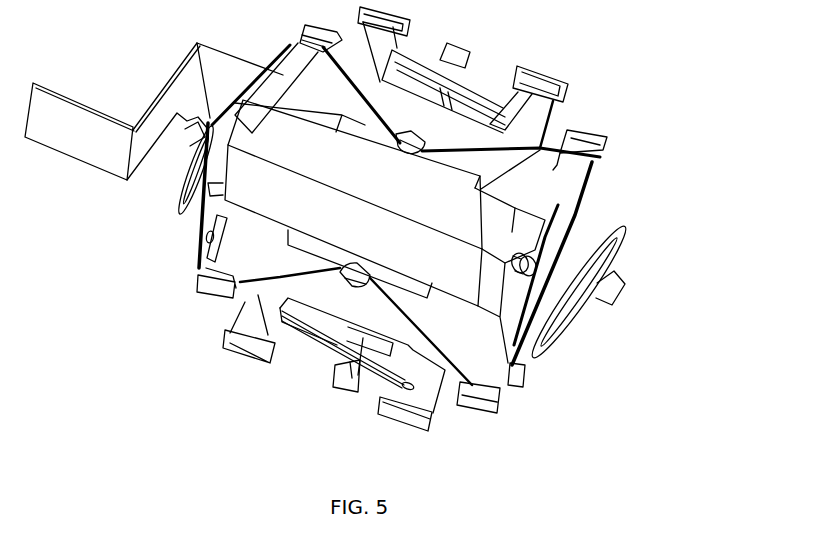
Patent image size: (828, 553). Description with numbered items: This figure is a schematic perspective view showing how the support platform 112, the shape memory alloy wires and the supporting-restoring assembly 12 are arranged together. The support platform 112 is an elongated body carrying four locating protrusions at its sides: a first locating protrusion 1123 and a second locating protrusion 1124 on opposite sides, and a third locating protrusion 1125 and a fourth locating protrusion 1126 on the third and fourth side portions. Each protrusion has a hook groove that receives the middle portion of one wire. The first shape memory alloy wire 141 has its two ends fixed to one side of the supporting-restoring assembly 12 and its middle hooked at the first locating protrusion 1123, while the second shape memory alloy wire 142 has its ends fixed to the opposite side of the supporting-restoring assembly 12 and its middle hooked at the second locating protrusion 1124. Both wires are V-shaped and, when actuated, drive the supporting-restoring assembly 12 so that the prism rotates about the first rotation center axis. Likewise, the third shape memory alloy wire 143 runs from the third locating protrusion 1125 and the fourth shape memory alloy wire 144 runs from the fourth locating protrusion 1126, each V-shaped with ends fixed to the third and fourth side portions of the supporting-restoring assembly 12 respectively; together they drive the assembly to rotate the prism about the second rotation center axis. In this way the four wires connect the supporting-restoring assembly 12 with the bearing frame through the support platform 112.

The support platform 112 is at (430, 208).
The second shape memory alloy wire 142 is at (288, 92).
The second locating protrusion 1124 is at (200, 135).
The third locating protrusion 1125 is at (407, 138).
The supporting-restoring assembly 12 is at (478, 130).
The third shape memory alloy wire 143 is at (540, 147).
The first shape memory alloy wire 141 is at (485, 250).
The first locating protrusion 1123 is at (530, 257).
The fourth shape memory alloy wire 144 is at (258, 287).
The fourth locating protrusion 1126 is at (356, 288).